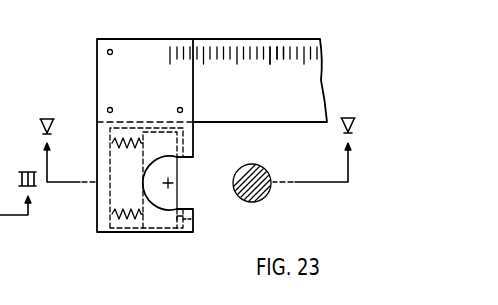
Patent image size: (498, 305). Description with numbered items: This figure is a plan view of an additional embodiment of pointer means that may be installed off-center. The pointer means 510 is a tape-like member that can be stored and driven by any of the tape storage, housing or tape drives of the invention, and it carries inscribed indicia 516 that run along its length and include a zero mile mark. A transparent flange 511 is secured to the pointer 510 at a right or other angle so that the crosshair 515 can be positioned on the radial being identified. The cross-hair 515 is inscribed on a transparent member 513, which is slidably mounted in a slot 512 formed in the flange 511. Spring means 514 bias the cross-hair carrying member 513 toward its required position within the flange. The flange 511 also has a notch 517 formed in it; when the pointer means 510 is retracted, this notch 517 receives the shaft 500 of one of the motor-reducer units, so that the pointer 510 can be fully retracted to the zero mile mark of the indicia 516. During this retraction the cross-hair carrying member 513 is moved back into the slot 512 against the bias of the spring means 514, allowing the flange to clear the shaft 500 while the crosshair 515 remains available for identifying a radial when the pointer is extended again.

The shaft 500 is at (267, 174).
The pointer means 510 is at (233, 38).
The transparent flange 511 is at (97, 60).
The slot 512 is at (193, 220).
The transparent member 513 is at (167, 230).
The spring means 514 is at (110, 147).
The cross-hair 515 is at (172, 181).
The indicia 516 is at (277, 55).
The notch 517 is at (180, 211).